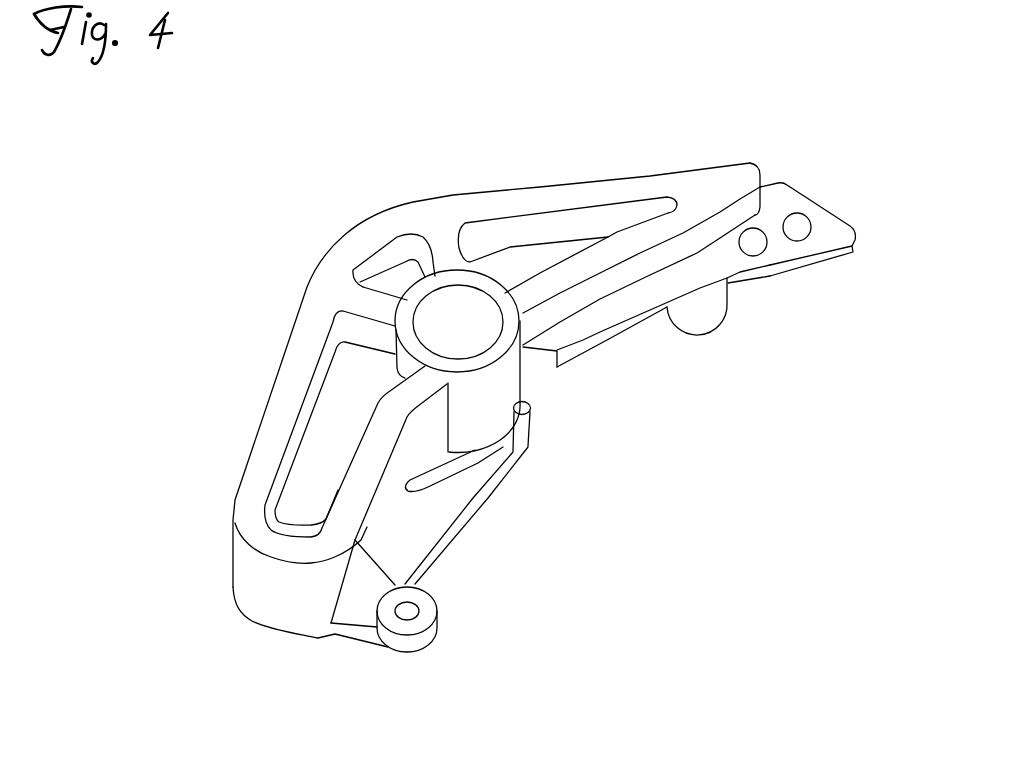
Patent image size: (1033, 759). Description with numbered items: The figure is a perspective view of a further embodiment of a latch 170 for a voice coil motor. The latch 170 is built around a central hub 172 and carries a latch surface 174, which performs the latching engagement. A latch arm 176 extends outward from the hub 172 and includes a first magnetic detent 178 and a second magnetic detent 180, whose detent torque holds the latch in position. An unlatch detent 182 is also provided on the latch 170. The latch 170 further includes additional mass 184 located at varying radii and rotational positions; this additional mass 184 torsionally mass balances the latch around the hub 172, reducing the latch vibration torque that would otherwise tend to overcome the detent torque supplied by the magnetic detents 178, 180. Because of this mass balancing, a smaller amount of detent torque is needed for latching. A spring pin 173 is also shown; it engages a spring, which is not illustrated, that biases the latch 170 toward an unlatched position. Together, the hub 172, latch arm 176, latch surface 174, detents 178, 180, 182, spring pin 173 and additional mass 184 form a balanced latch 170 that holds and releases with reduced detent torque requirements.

The latch 170 is at (293, 250).
The additional mass 184 is at (357, 228).
The latch arm 176 is at (737, 275).
The first magnetic detent 178 is at (750, 237).
The second magnetic detent 180 is at (793, 225).
The hub 172 is at (505, 383).
The latch surface 174 is at (537, 427).
The spring pin 173 is at (530, 430).
The unlatch detent 182 is at (410, 609).